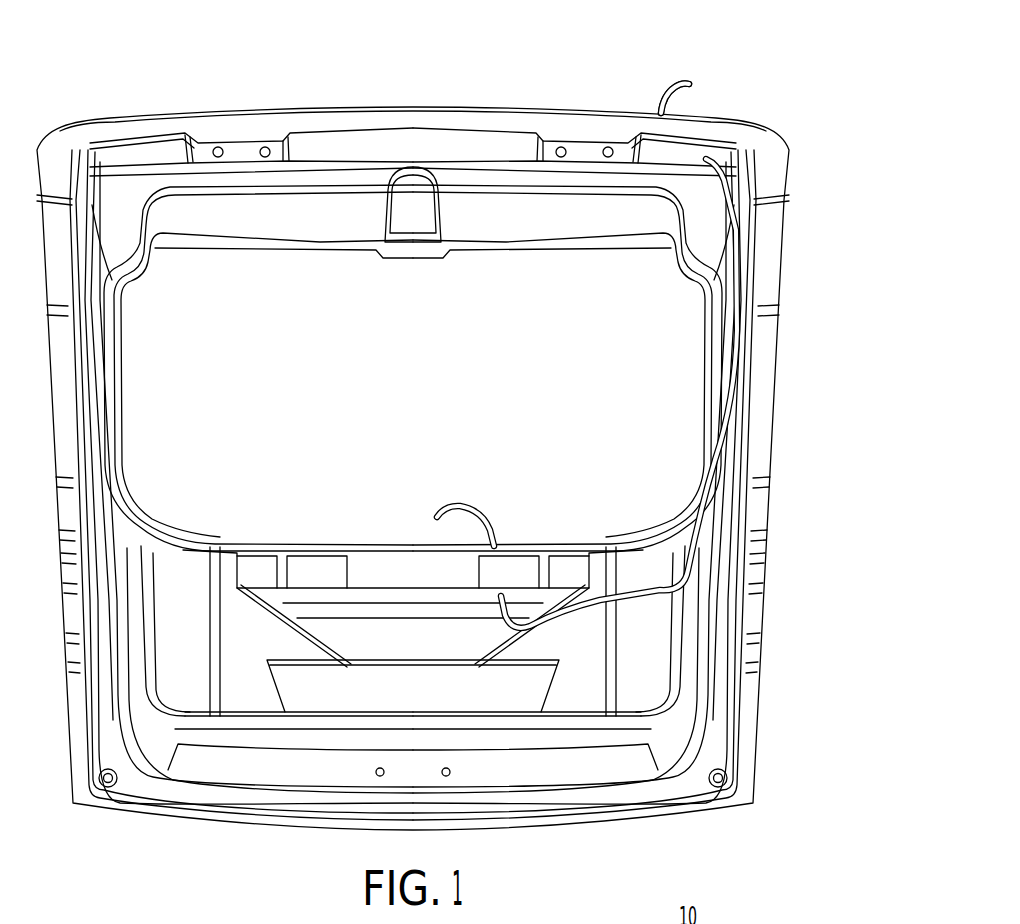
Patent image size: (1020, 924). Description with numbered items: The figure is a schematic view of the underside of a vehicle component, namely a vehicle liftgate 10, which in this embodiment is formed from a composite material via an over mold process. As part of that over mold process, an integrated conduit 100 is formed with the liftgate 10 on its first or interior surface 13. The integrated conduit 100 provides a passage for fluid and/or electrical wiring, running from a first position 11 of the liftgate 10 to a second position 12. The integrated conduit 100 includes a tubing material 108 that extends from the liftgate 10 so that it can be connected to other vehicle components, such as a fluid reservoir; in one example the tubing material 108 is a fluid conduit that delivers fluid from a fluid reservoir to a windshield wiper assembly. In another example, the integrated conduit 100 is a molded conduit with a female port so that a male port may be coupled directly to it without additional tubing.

The vehicle liftgate 10 is at (120, 65).
The first position 11 is at (633, 82).
The second position 12 is at (400, 519).
The interior surface 13 is at (654, 640).
The integrated conduit 100 is at (683, 585).
The tubing material 108 is at (722, 84).